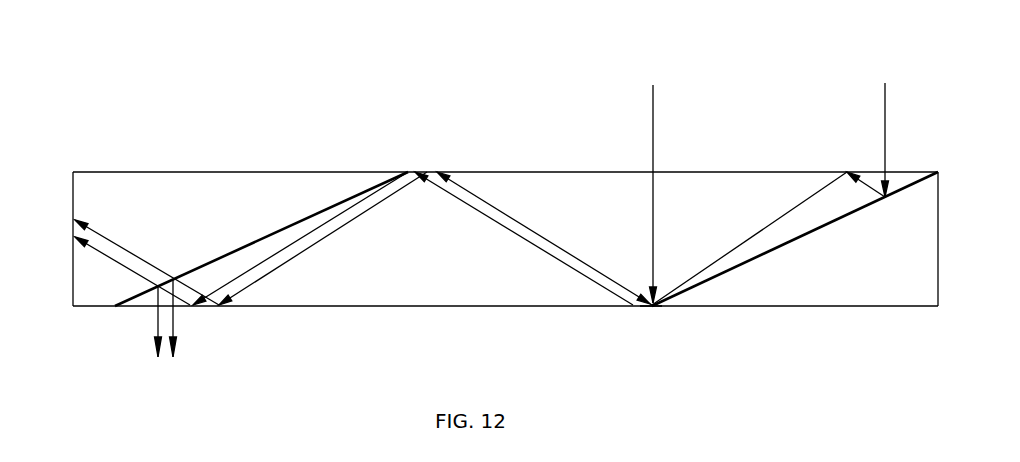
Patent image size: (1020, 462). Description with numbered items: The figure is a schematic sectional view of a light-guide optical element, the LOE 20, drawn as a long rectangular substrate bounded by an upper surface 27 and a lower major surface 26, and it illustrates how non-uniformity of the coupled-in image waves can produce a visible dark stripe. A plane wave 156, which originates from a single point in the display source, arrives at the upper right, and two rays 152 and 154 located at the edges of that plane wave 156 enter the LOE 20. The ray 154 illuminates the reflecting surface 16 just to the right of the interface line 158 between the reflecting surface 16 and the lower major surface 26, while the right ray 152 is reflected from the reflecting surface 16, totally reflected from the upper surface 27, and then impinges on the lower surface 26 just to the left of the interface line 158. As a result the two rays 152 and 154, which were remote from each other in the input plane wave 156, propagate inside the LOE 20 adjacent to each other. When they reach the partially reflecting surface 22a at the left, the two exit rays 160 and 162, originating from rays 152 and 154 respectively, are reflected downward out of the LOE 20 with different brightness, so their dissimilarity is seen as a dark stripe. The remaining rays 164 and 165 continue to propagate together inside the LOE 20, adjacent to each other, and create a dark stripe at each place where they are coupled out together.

The reflecting surface 16 is at (820, 225).
The LOE 20 is at (542, 182).
The surface 22a is at (267, 235).
The lower major surface 26 is at (762, 303).
The upper surface 27 is at (505, 170).
The ray 152 is at (577, 272).
The ray 154 is at (565, 253).
The plane wave 156 is at (727, 145).
The interface line 158 is at (642, 312).
The exit ray 160 is at (155, 325).
The exit ray 162 is at (180, 328).
The ray 164 is at (122, 268).
The ray 165 is at (105, 236).